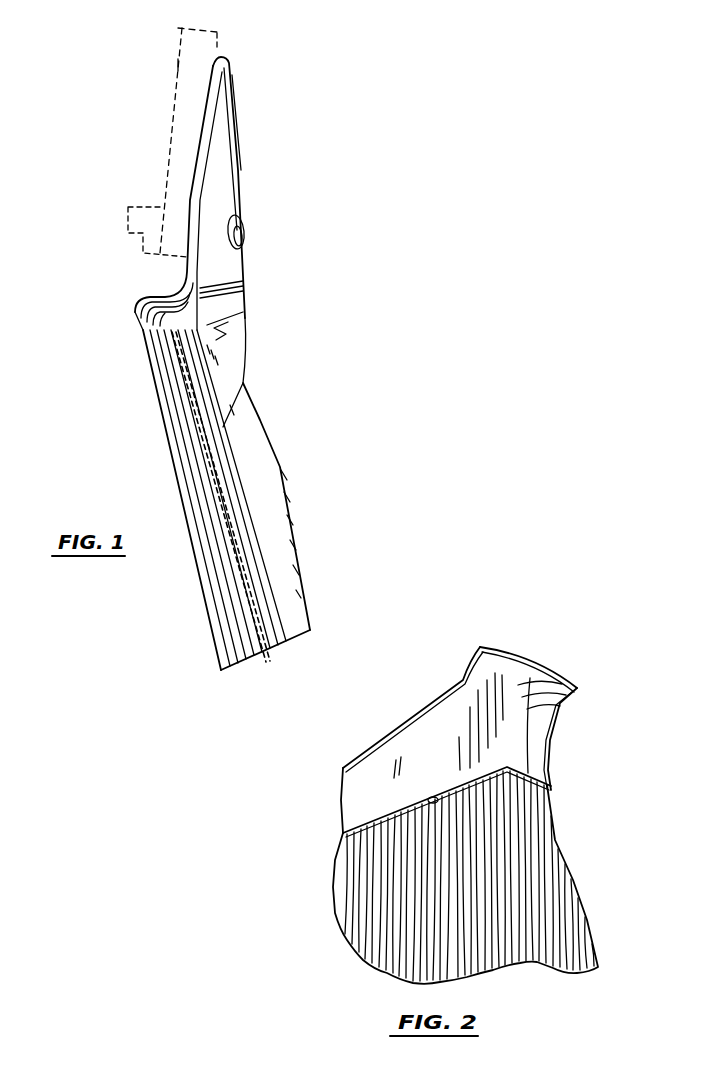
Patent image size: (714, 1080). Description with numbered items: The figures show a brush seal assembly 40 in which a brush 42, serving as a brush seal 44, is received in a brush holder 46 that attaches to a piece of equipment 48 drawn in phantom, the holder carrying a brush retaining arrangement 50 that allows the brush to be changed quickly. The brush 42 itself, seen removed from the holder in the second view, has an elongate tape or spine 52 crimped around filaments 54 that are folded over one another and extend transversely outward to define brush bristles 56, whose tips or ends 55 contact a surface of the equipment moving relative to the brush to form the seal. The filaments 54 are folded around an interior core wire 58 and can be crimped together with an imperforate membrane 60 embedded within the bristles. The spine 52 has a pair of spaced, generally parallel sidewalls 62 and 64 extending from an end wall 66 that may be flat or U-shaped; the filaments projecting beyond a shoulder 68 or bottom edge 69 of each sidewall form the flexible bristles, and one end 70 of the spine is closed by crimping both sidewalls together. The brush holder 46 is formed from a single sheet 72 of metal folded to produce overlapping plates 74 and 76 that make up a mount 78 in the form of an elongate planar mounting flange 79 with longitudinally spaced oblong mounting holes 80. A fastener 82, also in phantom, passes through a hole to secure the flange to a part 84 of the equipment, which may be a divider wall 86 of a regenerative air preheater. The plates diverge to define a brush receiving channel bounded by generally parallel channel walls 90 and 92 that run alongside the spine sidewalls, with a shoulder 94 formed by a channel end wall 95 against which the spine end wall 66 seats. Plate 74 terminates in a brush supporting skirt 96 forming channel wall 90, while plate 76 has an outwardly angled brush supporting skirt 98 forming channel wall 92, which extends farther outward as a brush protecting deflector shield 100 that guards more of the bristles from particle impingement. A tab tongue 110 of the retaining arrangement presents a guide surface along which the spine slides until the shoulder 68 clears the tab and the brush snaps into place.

In FIG. 1, the brush seal assembly 40 is at (335, 287).
In FIG. 1, the brush 42 is at (193, 587).
In FIG. 2, the brush 42 is at (582, 793).
In FIG. 1, the brush seal 44 is at (323, 538).
In FIG. 1, the brush holder 46 is at (298, 148).
In FIG. 1, the piece of equipment 48 is at (173, 88).
In FIG. 1, the brush retaining arrangement 50 is at (207, 325).
In FIG. 1, the tape or spine 52 is at (200, 300).
In FIG. 2, the tape or spine 52 is at (560, 647).
In FIG. 1, the filaments 54 is at (228, 428).
In FIG. 2, the filaments 54 is at (387, 950).
In FIG. 1, the tips or ends 55 is at (233, 670).
In FIG. 1, the brush bristles 56 is at (222, 615).
In FIG. 2, the brush bristles 56 is at (563, 838).
In FIG. 1, the core wire 58 is at (140, 323).
In FIG. 1, the membrane 60 is at (272, 658).
In FIG. 1, the sidewall 62 is at (157, 357).
In FIG. 2, the sidewall 62 is at (447, 713).
In FIG. 1, the sidewall 64 is at (200, 323).
In FIG. 2, the sidewall 64 is at (550, 747).
In FIG. 1, the end wall 66 is at (143, 307).
In FIG. 2, the end wall 66 is at (510, 653).
In FIG. 2, the shoulder 68 is at (378, 827).
In FIG. 2, the bottom edge 69 is at (437, 798).
In FIG. 2, the end 70 is at (570, 700).
In FIG. 1, the sheet 72 is at (232, 92).
In FIG. 1, the plate 74 is at (227, 143).
In FIG. 1, the plate 76 is at (178, 137).
In FIG. 1, the mount 78 is at (287, 168).
In FIG. 1, the mounting flange 79 is at (197, 155).
In FIG. 1, the mounting holes 80 is at (242, 220).
In FIG. 1, the fastener 82 is at (128, 207).
In FIG. 1, the part of the equipment 84 is at (217, 50).
In FIG. 1, the divider wall 86 is at (178, 65).
In FIG. 1, the channel wall 90 is at (240, 357).
In FIG. 1, the channel wall 92 is at (160, 390).
In FIG. 1, the shoulder 94 is at (170, 300).
In FIG. 1, the channel end wall 95 is at (160, 287).
In FIG. 1, the brush supporting skirt 96 is at (230, 385).
In FIG. 1, the brush supporting skirt 98 is at (170, 413).
In FIG. 1, the brush protecting deflector shield 100 is at (178, 457).
In FIG. 1, the tab tongue 110 is at (227, 337).